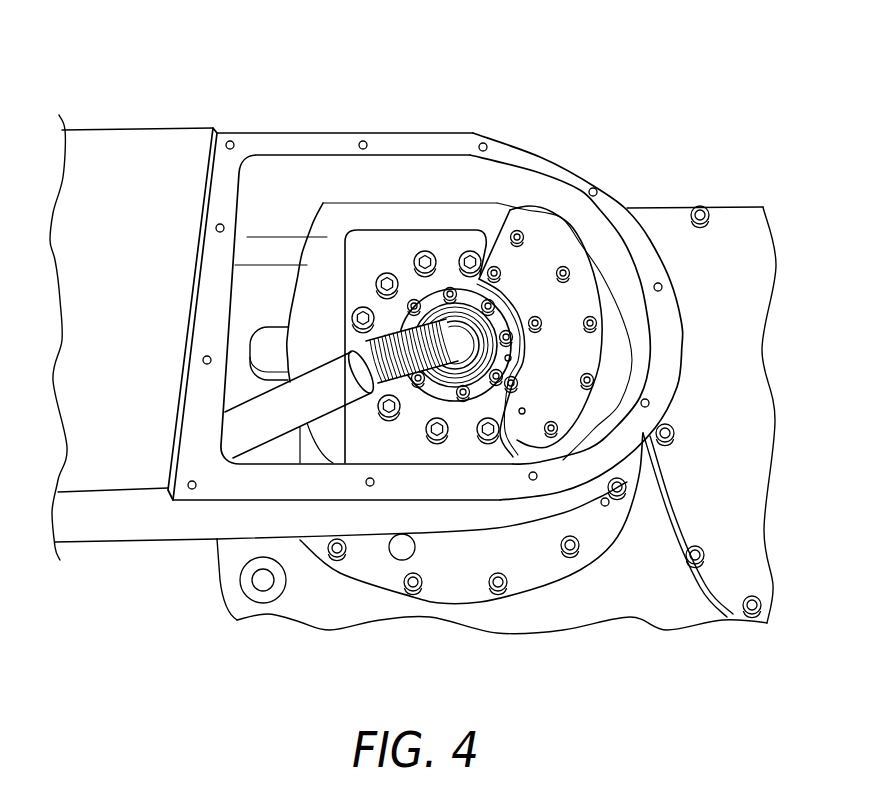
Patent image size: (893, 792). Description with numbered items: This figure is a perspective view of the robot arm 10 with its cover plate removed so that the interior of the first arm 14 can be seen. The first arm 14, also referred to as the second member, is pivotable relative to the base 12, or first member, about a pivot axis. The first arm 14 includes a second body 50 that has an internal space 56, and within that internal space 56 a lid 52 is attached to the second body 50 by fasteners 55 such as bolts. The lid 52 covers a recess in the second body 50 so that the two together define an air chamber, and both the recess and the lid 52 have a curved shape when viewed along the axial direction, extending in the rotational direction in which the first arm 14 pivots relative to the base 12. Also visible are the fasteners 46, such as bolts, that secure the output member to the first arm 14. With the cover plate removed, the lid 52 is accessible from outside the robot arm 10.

The robot arm 10 is at (540, 70).
The base 12 is at (683, 634).
The first arm 14 is at (490, 120).
The fasteners 46 is at (468, 256).
The second body 50 is at (307, 149).
The lid 52 is at (535, 318).
The fasteners 55 is at (590, 318).
The internal space 56 is at (263, 280).